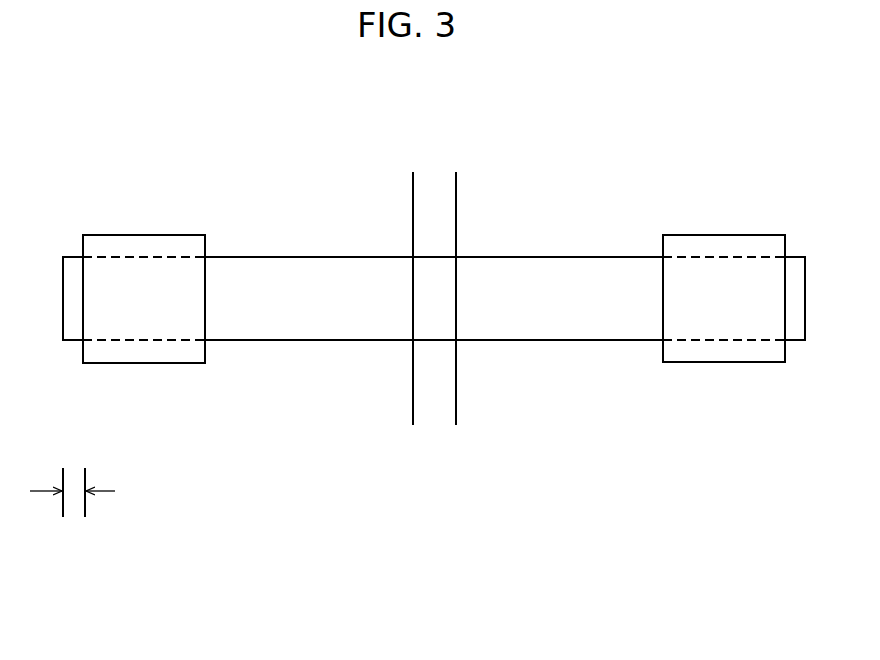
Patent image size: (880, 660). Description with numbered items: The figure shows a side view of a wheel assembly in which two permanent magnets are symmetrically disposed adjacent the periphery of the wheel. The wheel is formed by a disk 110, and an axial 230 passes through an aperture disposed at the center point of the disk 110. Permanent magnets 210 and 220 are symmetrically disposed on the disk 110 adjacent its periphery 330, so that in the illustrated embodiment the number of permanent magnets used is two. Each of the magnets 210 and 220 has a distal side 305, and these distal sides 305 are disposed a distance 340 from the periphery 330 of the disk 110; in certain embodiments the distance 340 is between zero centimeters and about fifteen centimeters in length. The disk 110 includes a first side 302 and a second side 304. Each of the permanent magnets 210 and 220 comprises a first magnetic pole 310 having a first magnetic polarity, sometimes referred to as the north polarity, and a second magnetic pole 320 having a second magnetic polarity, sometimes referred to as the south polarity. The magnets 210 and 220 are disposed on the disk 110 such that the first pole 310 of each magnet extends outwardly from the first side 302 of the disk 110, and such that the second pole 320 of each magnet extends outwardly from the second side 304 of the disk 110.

The disk 110 is at (434, 290).
The permanent magnet 210 is at (81, 306).
The permanent magnet 220 is at (788, 323).
The axial 230 is at (456, 180).
The first side 302 is at (548, 257).
The second side 304 is at (548, 340).
The distal side 305 is at (83, 362).
The first magnetic pole 310 is at (148, 235).
The second magnetic pole 320 is at (148, 363).
The periphery 330 is at (63, 270).
The distance 340 is at (74, 517).